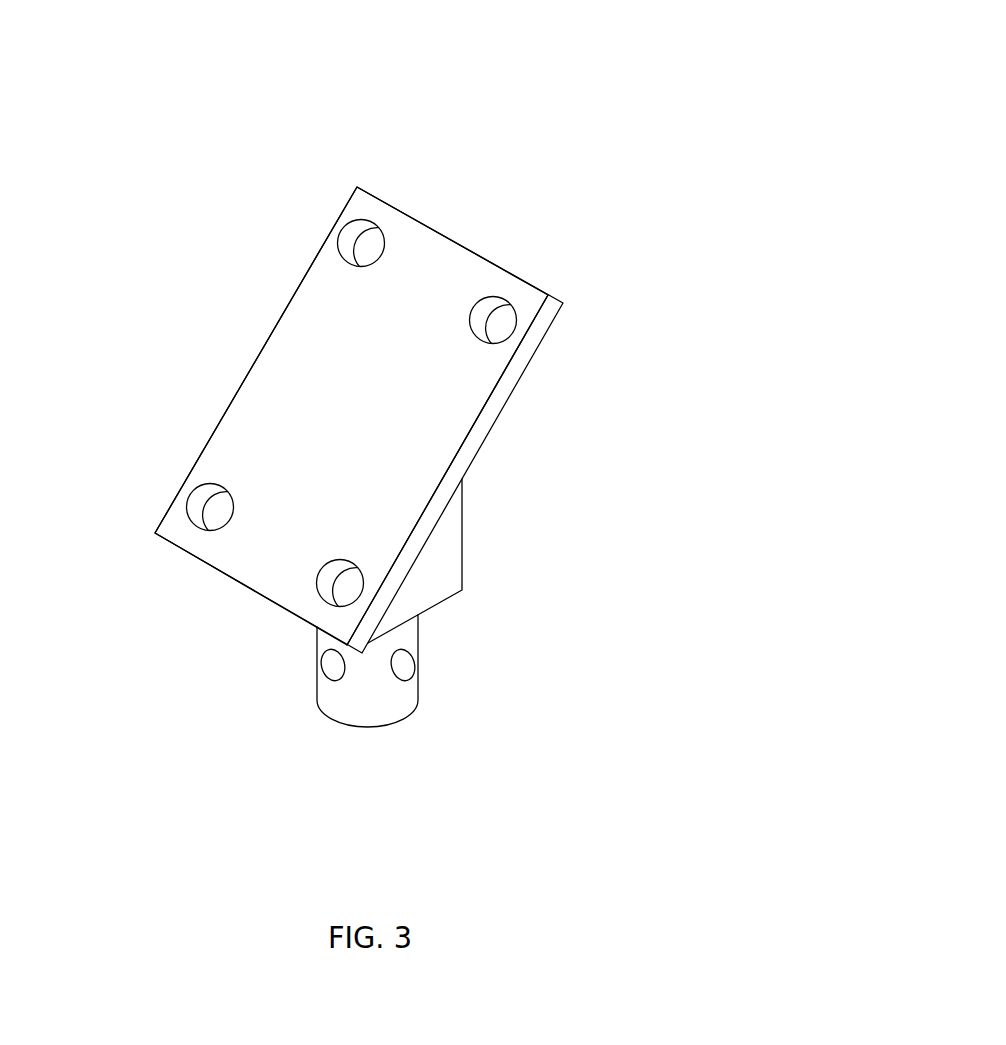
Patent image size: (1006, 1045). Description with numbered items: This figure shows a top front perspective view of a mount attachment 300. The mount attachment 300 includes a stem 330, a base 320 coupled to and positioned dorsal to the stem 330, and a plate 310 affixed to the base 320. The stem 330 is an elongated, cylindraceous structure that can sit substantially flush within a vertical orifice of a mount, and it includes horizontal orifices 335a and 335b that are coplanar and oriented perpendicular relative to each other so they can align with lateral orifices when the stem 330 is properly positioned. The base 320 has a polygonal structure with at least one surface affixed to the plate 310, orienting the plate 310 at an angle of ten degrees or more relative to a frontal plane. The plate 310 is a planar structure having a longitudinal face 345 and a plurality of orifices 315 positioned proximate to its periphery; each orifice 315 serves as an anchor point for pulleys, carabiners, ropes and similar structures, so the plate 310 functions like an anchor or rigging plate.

The mount attachment 300 is at (883, 155).
The plate 310 is at (367, 192).
The orifice 315 is at (203, 500).
The base 320 is at (443, 540).
The stem 330 is at (367, 727).
The horizontal orifice 335a is at (333, 663).
The horizontal orifice 335b is at (405, 665).
The longitudinal face 345 is at (438, 285).